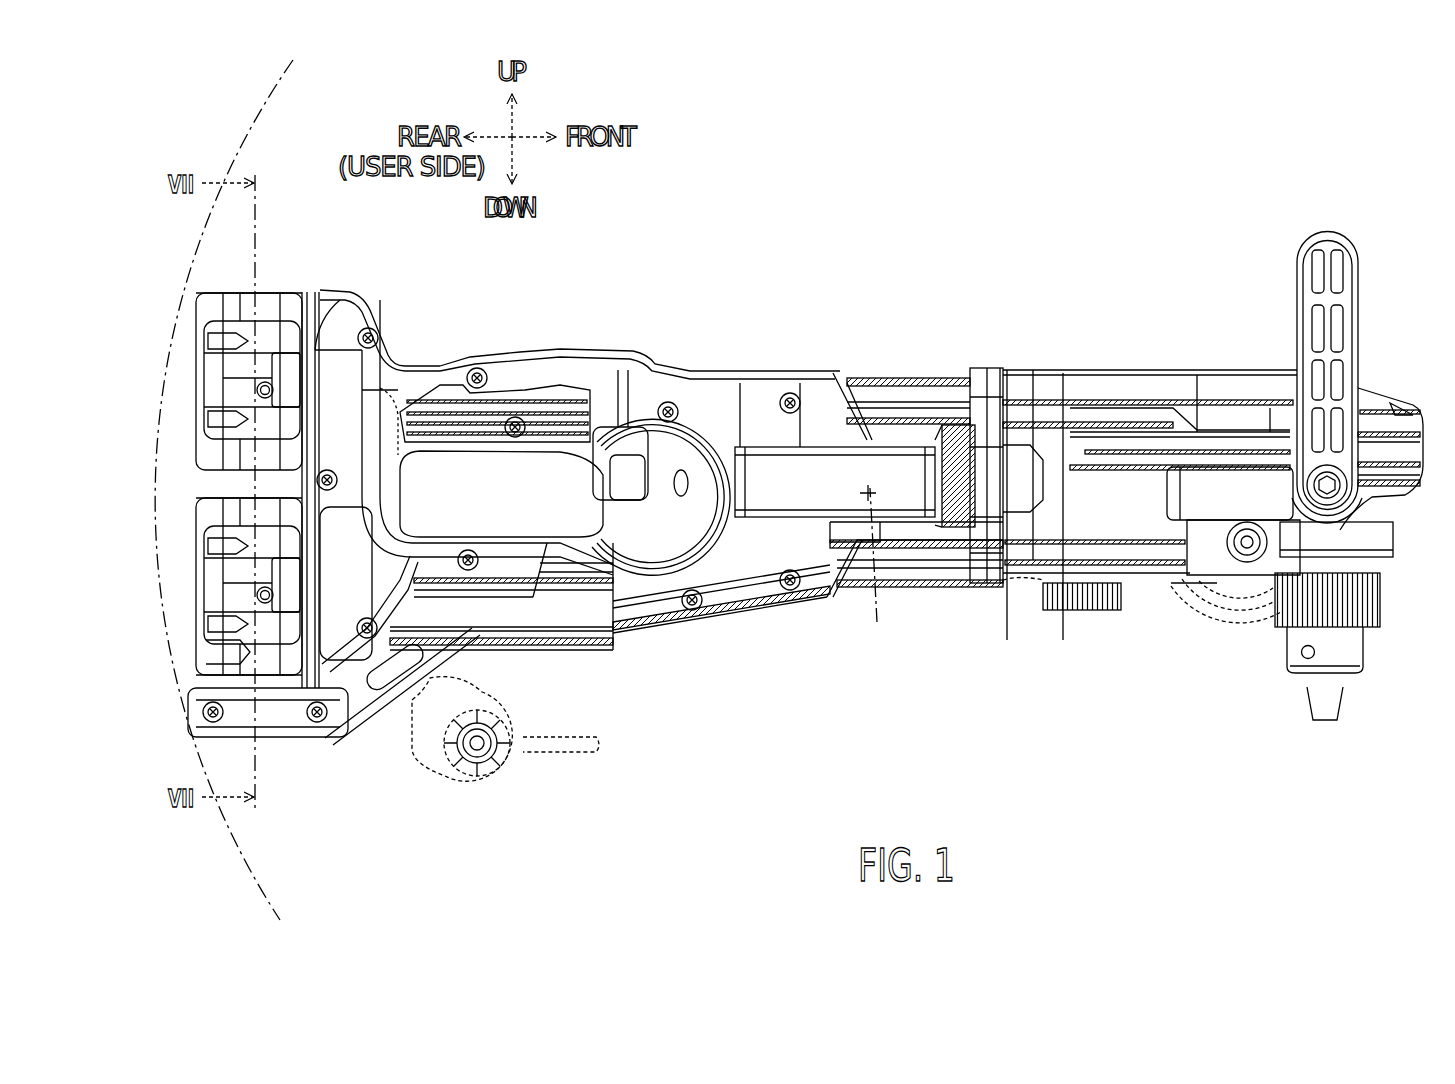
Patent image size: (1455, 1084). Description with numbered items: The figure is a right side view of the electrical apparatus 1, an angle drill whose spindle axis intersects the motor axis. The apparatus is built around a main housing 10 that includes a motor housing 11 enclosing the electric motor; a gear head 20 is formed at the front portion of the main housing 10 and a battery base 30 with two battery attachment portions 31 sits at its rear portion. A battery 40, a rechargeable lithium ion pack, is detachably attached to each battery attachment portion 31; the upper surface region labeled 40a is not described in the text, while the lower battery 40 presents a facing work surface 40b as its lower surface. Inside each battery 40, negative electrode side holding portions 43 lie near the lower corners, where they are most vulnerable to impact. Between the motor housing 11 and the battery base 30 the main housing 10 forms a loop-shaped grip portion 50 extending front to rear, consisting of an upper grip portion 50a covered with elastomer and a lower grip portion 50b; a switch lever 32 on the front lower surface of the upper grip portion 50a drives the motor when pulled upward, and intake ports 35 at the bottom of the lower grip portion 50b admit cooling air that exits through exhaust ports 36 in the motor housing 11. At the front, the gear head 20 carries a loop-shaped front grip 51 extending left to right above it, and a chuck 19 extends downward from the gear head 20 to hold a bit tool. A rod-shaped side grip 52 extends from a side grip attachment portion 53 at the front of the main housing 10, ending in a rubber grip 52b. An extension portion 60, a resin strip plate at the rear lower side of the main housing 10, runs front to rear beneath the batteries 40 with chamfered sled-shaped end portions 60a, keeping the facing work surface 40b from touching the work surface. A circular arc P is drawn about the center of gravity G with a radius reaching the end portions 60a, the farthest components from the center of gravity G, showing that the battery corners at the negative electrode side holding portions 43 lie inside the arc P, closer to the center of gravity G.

The electrical apparatus 1 is at (722, 240).
The main housing 10 is at (930, 300).
The motor housing 11 is at (897, 380).
The chuck 19 is at (1345, 653).
The gear head 20 is at (1397, 410).
The battery base 30 is at (384, 335).
The battery attachment portion 31 is at (303, 296).
The switch lever 32 is at (615, 510).
The intake ports 35 is at (586, 653).
The exhaust ports 36 is at (1010, 583).
The battery 40 is at (200, 305).
The battery pack upper surface 40a is at (340, 300).
The facing work surface 40b is at (233, 680).
The negative electrode side holding portions 43 is at (233, 653).
The grip portion 50 is at (563, 352).
The upper grip portion 50a is at (483, 367).
The lower grip portion 50b is at (487, 682).
The front grip 51 is at (1345, 272).
The side grip 52 is at (1200, 605).
The rubber grip 52b is at (1240, 612).
The side grip attachment portion 53 is at (1240, 522).
The extension portion 60 is at (310, 690).
The end portions 60a is at (187, 740).
The center of gravity G is at (871, 572).
The circular arc P is at (237, 150).